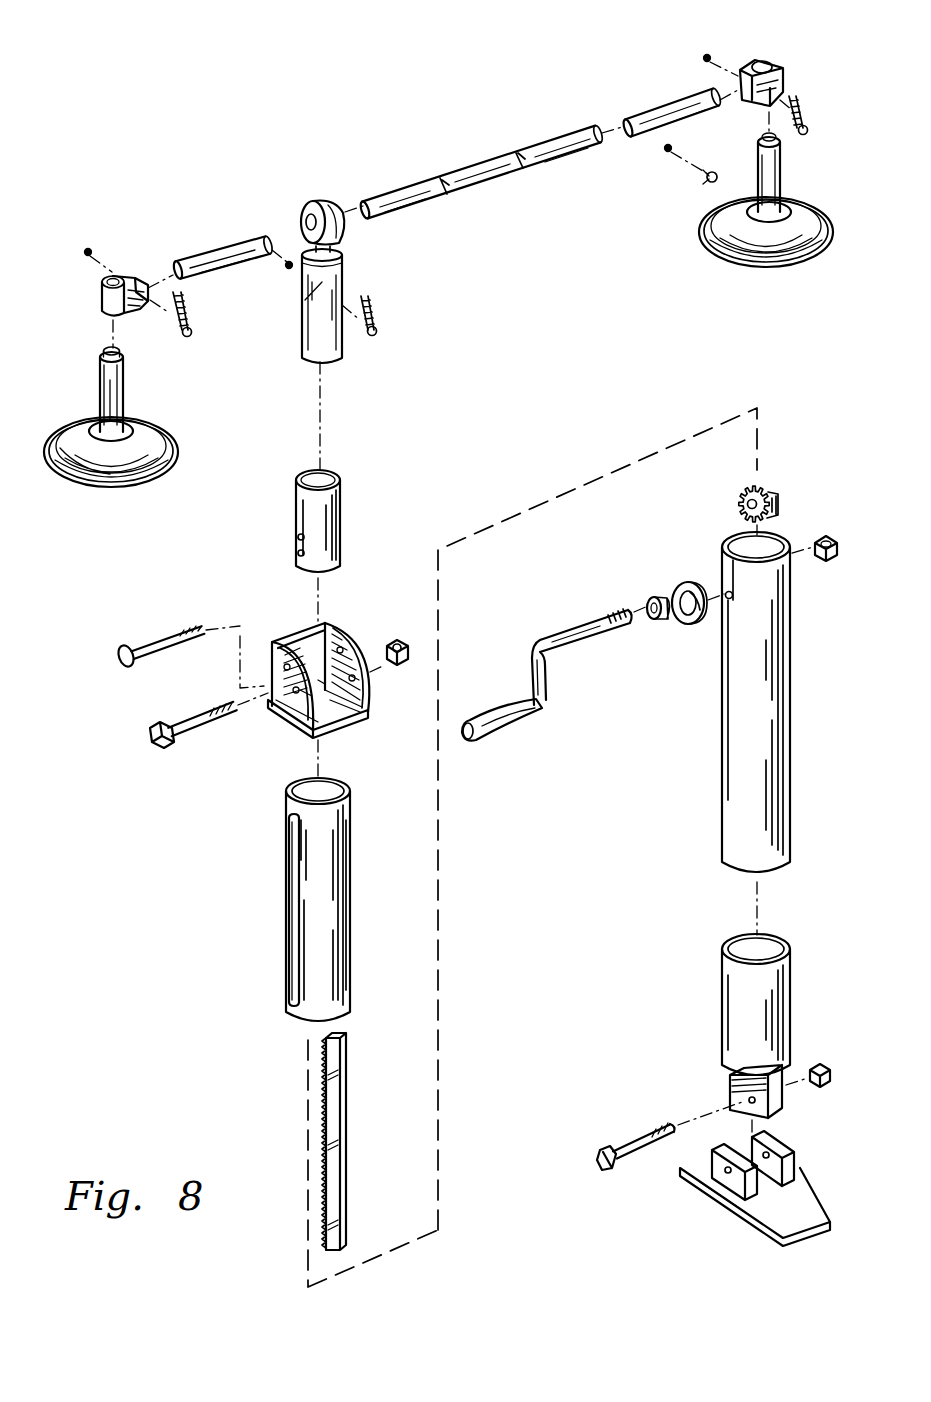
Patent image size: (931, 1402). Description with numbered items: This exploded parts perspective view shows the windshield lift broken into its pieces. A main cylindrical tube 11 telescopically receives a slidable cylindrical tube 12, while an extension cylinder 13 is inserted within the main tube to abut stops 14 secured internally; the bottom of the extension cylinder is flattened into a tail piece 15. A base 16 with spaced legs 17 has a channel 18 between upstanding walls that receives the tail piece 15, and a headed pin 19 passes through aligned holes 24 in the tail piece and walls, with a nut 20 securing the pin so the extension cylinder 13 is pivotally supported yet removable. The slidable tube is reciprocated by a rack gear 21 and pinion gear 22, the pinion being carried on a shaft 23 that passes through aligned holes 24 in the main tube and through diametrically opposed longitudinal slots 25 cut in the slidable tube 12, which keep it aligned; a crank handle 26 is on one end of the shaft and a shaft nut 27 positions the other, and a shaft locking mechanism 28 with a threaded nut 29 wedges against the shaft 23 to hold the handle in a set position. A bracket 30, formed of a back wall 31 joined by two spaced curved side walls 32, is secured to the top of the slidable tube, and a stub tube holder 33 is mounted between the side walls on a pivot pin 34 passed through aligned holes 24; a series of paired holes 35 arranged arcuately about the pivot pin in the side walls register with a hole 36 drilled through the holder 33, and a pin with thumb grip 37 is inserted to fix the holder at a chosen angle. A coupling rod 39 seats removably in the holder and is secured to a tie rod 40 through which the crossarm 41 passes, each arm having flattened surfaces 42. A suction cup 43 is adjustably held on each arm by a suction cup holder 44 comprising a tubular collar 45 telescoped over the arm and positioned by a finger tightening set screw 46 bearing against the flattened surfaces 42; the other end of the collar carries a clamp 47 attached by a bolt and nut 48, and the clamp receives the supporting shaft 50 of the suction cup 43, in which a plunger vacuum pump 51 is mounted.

The main cylindrical tube 11 is at (290, 808).
The slidable cylindrical tube 12 is at (790, 690).
The extension cylinder 13 is at (788, 990).
The stops 14 is at (780, 940).
The tail piece 15 is at (735, 1085).
The base 16 is at (720, 1180).
The spaced legs 17 is at (810, 1205).
The channel 18 is at (770, 1188).
The headed pin 19 is at (604, 1163).
The nut 20 is at (832, 1073).
The rack gear 21 is at (343, 1100).
The pinion gear 22 is at (768, 486).
The shaft 23 is at (592, 640).
The aligned holes 24 is at (726, 590).
The longitudinal slots 25 is at (290, 963).
The crank handle 26 is at (480, 742).
The shaft nut 27 is at (832, 558).
The shaft locking mechanism 28 is at (655, 597).
The threaded nut 29 is at (700, 625).
The bracket 30 is at (355, 596).
The back wall 31 is at (300, 668).
The side walls 32 is at (270, 655).
The stub tube holder 33 is at (340, 492).
The pivot pin 34 is at (152, 735).
The paired holes 35 is at (326, 632).
The hole 36 is at (298, 556).
The pin with thumb grip 37 is at (140, 615).
The coupling rod 39 is at (342, 270).
The tie rod 40 is at (342, 228).
The crossarm 41 is at (475, 172).
The flattened surfaces 42 is at (432, 196).
The suction cup 43 is at (92, 478).
The suction cup holder 44 is at (112, 272).
The tubular collar 45 is at (213, 248).
The finger tightening set screw 46 is at (377, 331).
The clamp 47 is at (100, 295).
The bolt and nut 48 is at (88, 250).
The supporting shaft 50 is at (124, 380).
The plunger vacuum pump 51 is at (105, 352).